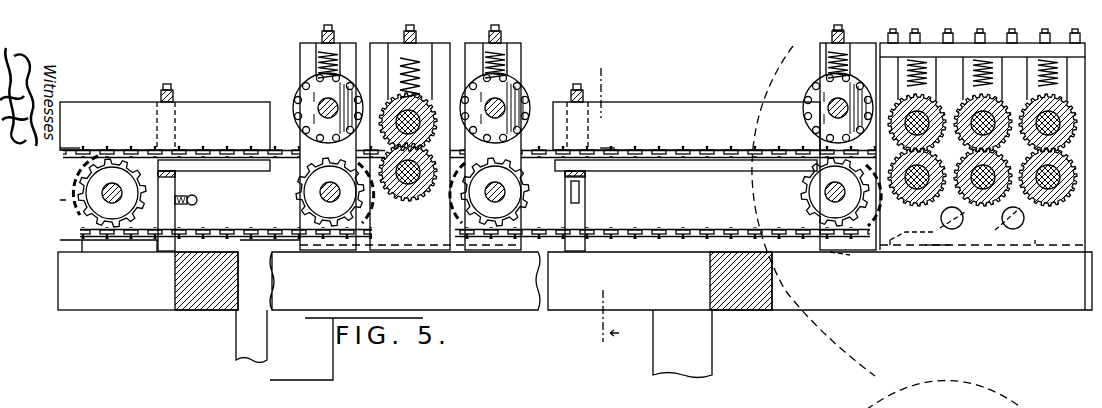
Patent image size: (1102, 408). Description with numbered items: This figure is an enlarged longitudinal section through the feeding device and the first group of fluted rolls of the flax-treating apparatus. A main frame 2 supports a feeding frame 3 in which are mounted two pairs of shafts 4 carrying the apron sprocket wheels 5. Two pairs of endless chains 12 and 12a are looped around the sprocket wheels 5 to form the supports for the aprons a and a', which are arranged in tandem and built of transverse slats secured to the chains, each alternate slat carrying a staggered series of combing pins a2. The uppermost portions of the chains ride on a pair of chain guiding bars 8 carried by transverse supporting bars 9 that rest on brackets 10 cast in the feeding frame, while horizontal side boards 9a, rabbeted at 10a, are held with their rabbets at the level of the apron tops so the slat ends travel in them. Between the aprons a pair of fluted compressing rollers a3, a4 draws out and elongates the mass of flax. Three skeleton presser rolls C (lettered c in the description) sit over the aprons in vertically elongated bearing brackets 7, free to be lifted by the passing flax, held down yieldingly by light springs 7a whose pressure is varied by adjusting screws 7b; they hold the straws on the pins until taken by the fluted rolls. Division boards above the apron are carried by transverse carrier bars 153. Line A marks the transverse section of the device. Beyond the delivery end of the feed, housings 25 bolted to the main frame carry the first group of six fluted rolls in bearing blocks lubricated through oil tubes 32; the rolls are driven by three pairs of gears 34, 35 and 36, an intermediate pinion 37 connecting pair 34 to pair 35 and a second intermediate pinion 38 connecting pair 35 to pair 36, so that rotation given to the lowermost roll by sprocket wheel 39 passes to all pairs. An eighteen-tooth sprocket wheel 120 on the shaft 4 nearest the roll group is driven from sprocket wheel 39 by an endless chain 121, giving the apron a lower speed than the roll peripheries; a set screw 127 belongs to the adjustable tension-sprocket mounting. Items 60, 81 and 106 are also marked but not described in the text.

The main frame 2 is at (140, 303).
The feeding frame 3 is at (160, 211).
The shaft 4 is at (105, 193).
The apron carrying-sprocket wheel 5 is at (65, 170).
The vertically elongated bearing bracket 7 is at (318, 58).
The spring 7a is at (308, 62).
The adjusting screw 7b is at (830, 34).
The chain guiding bar 8 is at (217, 166).
The transverse supporting bar 9 is at (175, 186).
The horizontal side board 9a is at (97, 112).
The bracket 10 is at (590, 188).
The rabbet 10a is at (68, 150).
The endless chain 12 is at (112, 150).
The endless chain 12a is at (625, 149).
The housing 25 is at (1080, 232).
The oil tube 32 is at (884, 44).
The gear pair 34 is at (892, 106).
The gear pair 35 is at (977, 150).
The gear pair 36 is at (1042, 150).
The intermediate pinion 37 is at (940, 226).
The second intermediate pinion 38 is at (1040, 232).
The sprocket wheel 39 is at (1012, 226).
The wheel 60 is at (944, 394).
The frame member 81 is at (559, 363).
The guide 106 is at (845, 354).
The sprocket wheel 120 is at (851, 257).
The endless chain 121 is at (937, 248).
The set screw 127 is at (757, 405).
The transverse carrier bar 153 is at (175, 92).
The apron a is at (165, 126).
The apron a' is at (686, 126).
The combing pins a2 is at (67, 198).
The fluted compressing roller a3 is at (410, 204).
The fluted compressing roller a4 is at (385, 137).
The section line A is at (607, 211).
The skeleton presser roll C is at (298, 90).
The skeleton presser roll c is at (980, 219).